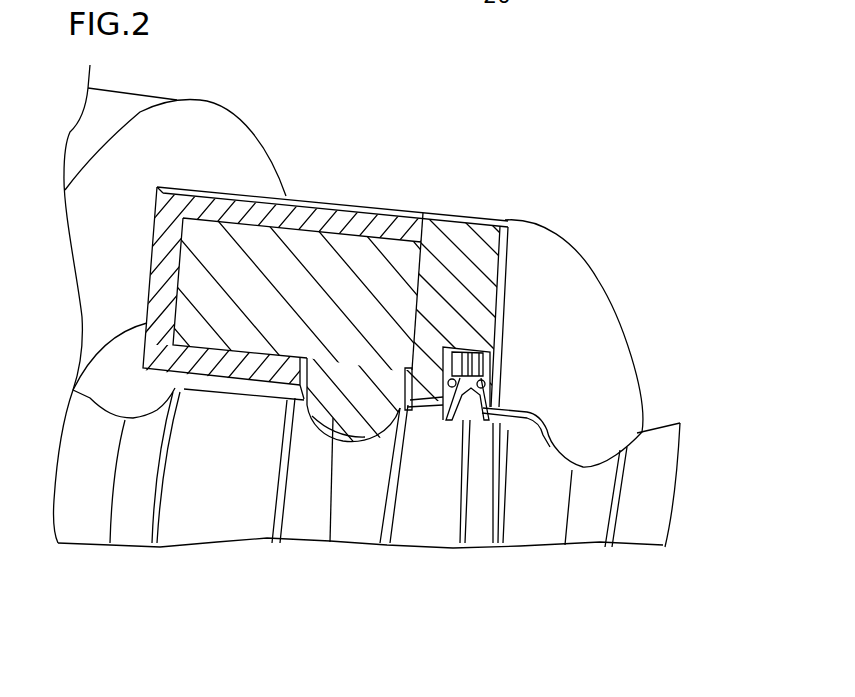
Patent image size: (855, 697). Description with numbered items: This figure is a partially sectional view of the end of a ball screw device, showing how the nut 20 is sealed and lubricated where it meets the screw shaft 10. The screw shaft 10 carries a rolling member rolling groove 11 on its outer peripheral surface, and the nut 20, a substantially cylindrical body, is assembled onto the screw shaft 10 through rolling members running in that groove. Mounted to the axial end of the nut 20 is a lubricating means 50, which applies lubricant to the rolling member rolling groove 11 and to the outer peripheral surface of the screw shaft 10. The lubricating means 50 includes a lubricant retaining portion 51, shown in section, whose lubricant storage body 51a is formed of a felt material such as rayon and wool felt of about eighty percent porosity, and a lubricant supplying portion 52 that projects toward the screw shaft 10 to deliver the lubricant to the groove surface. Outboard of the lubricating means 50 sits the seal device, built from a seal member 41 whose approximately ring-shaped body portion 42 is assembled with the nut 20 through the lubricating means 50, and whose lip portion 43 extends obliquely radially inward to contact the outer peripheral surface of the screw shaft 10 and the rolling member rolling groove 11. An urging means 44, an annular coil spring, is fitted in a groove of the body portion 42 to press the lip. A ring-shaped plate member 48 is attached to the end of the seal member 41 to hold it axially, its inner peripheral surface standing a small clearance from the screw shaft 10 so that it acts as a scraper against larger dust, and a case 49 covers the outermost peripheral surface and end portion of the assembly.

The screw shaft 10 is at (657, 490).
The rolling member rolling groove 11 is at (512, 522).
The nut 20 is at (247, 148).
The seal member 41 is at (446, 417).
The body portion 42 is at (490, 368).
The lip portion 43 is at (492, 406).
The urging means 44 is at (490, 383).
The plate member 48 is at (537, 253).
The case 49 is at (460, 247).
The lubricating means 50 is at (393, 206).
The lubricant retaining portion 51 is at (357, 200).
The lubricant storage body 51a is at (305, 268).
The lubricant supplying portion 52 is at (335, 419).